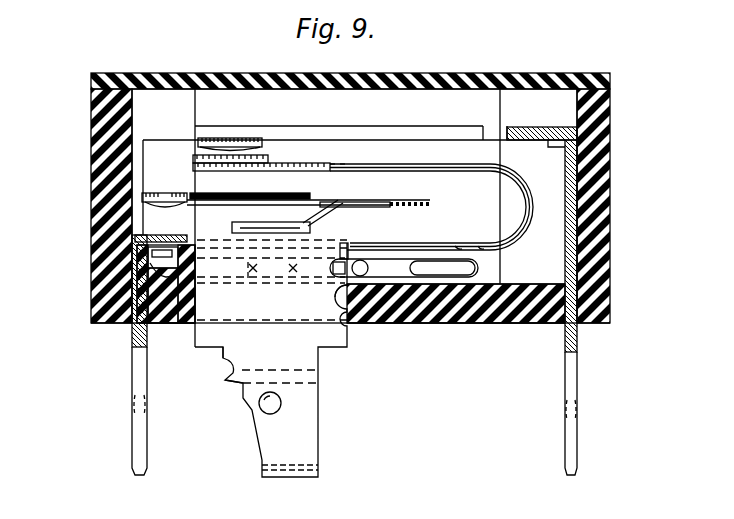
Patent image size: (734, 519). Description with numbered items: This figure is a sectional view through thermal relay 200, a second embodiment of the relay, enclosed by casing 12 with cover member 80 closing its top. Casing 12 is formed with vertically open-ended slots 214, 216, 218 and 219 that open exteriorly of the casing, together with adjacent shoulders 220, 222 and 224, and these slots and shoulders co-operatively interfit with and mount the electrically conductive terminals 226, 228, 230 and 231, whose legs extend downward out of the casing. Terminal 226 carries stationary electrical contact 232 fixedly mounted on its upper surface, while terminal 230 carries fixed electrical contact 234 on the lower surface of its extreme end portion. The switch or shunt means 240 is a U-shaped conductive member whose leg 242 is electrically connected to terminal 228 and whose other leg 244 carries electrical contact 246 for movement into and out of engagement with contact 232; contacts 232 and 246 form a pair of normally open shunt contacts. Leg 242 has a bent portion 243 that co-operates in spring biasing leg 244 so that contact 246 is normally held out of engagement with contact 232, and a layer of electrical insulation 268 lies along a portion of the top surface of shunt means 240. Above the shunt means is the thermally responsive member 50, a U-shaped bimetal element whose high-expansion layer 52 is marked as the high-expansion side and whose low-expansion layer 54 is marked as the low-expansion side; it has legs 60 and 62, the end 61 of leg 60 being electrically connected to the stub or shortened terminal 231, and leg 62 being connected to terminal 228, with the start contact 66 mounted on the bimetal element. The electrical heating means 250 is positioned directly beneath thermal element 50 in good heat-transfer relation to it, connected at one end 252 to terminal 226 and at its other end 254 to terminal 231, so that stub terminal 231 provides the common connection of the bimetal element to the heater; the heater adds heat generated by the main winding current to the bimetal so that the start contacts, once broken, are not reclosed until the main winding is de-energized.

The cover member 80 is at (487, 73).
The casing 12 is at (603, 220).
The thermal relay 200 is at (642, 108).
The slot 218 is at (583, 306).
The terminal 230 is at (572, 370).
The shoulder 224 is at (548, 140).
The slot 214 is at (135, 325).
The terminal 226 is at (137, 378).
The fixed electrical contact 234 is at (222, 140).
The start contact 66 is at (266, 156).
The end of leg 61 is at (215, 165).
The leg 60 is at (326, 163).
The leg 62 is at (344, 163).
The thermally responsive member 50 is at (377, 158).
The high-expansion layer 52 is at (400, 165).
The low-expansion layer 54 is at (400, 174).
The electrical contact 246 is at (165, 196).
The leg 244 is at (320, 201).
The layer of electrical insulation 268 is at (260, 196).
The switch means 240 is at (395, 199).
The bent portion 243 is at (326, 208).
The leg 242 is at (252, 222).
The terminal 228 is at (320, 394).
The slot 216 is at (350, 325).
The end of heater 254 is at (247, 275).
The slot 219 is at (200, 340).
The stub terminal 231 is at (213, 381).
The shoulder 222 is at (350, 246).
The electrical heating means 250 is at (480, 268).
The stationary electrical contact 232 is at (161, 247).
The end of heater 252 is at (150, 257).
The shoulder 220 is at (140, 273).